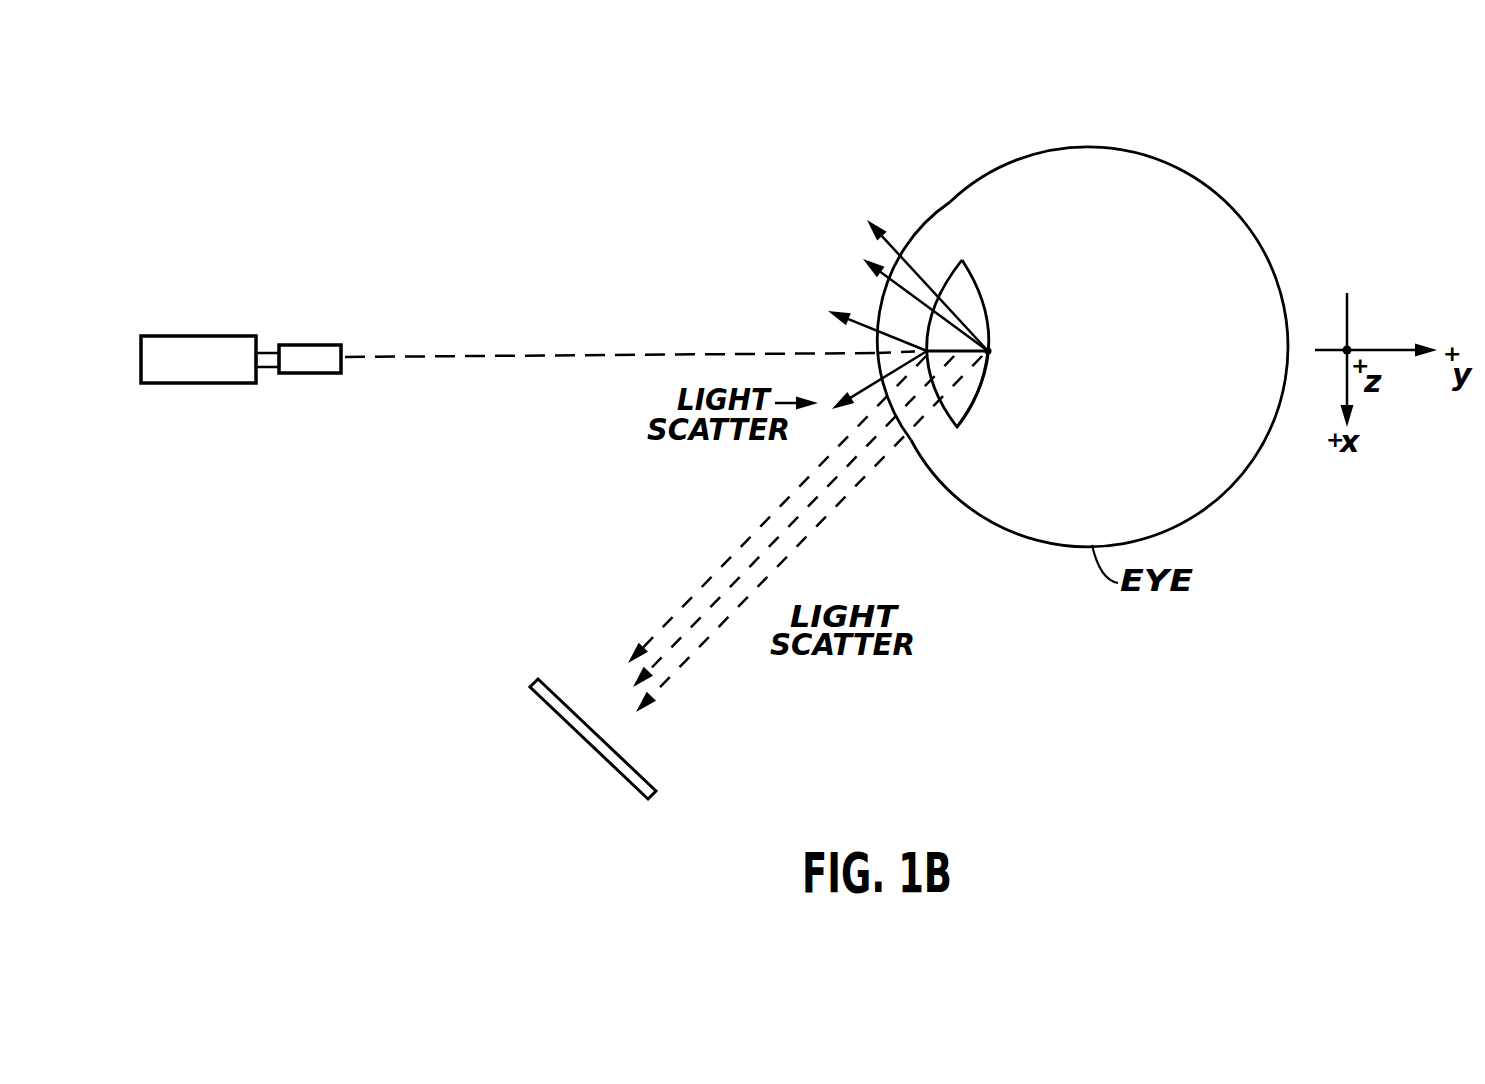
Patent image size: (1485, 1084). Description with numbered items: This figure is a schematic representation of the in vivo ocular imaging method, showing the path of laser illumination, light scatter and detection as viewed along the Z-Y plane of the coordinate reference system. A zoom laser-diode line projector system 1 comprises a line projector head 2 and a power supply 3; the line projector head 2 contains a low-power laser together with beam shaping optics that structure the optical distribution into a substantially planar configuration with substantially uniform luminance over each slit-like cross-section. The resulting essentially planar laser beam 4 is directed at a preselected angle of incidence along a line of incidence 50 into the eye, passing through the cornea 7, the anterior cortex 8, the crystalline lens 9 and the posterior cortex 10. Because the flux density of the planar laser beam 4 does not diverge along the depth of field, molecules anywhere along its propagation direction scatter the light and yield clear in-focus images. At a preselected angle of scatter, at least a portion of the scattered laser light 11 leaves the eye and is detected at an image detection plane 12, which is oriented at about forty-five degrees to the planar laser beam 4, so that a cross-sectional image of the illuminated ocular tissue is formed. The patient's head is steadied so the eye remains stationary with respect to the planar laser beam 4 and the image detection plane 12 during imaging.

The zoom laser-diode line projector system 1 is at (242, 357).
The line projector head 2 is at (307, 373).
The power supply 3 is at (197, 383).
The planar laser beam 4 is at (572, 355).
The cornea 7 is at (988, 351).
The anterior cortex 8 is at (913, 292).
The crystalline lens 9 is at (962, 260).
The posterior cortex 10 is at (988, 351).
The scattered laser light 11 is at (788, 553).
The image detection plane 12 is at (545, 697).
The line of incidence 50 is at (989, 352).